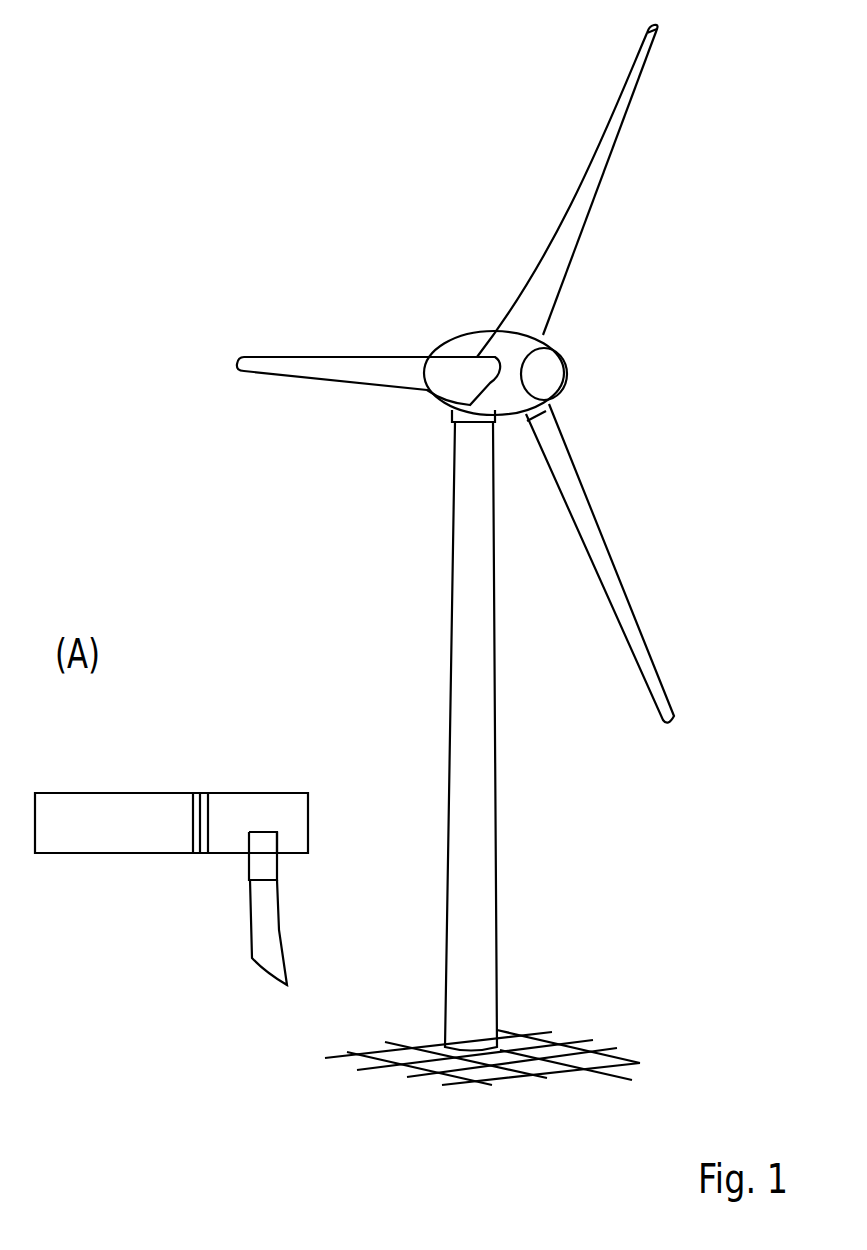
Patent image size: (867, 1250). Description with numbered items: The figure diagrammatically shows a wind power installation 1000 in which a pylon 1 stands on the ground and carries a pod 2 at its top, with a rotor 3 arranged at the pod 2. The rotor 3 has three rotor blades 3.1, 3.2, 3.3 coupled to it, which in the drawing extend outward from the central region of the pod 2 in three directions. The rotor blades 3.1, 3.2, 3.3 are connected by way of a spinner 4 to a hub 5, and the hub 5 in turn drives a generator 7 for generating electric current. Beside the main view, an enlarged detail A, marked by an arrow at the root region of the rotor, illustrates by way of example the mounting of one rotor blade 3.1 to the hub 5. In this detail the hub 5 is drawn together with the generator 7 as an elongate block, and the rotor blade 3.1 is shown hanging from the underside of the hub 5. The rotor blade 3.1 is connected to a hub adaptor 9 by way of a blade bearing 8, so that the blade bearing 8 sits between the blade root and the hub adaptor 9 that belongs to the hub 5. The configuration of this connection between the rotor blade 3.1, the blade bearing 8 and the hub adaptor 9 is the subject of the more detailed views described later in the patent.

The wind power installation 1000 is at (741, 96).
The pylon 1 is at (473, 718).
The pod 2 is at (467, 347).
The rotor 3 is at (518, 341).
The rotor blade 3.1 is at (587, 185).
The rotor blade 3.2 is at (570, 487).
The rotor blade 3.3 is at (367, 372).
The spinner 4 is at (551, 373).
The detail A is at (497, 402).
The hub 5 is at (235, 807).
The generator 7 is at (100, 807).
The blade bearing 8 is at (265, 863).
The hub adaptor 9 is at (265, 842).